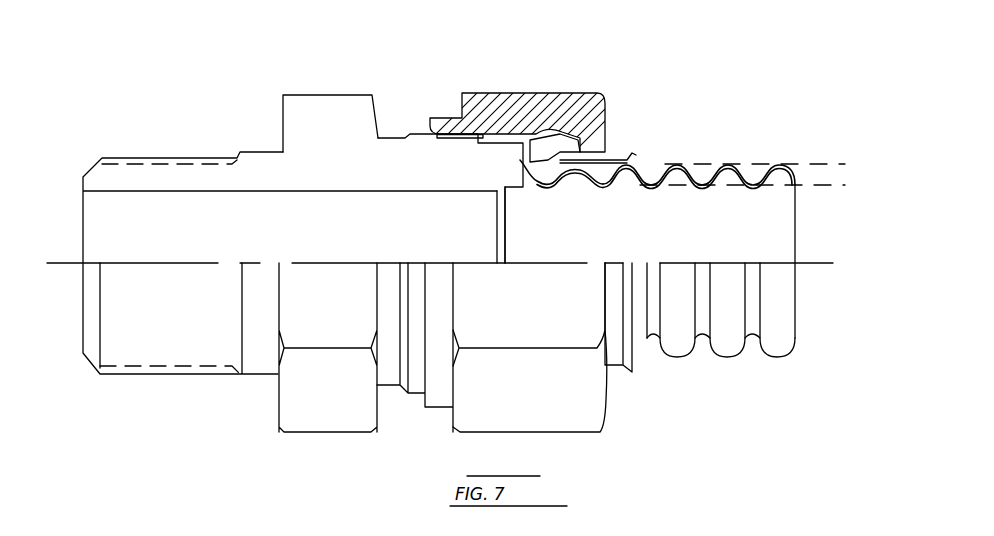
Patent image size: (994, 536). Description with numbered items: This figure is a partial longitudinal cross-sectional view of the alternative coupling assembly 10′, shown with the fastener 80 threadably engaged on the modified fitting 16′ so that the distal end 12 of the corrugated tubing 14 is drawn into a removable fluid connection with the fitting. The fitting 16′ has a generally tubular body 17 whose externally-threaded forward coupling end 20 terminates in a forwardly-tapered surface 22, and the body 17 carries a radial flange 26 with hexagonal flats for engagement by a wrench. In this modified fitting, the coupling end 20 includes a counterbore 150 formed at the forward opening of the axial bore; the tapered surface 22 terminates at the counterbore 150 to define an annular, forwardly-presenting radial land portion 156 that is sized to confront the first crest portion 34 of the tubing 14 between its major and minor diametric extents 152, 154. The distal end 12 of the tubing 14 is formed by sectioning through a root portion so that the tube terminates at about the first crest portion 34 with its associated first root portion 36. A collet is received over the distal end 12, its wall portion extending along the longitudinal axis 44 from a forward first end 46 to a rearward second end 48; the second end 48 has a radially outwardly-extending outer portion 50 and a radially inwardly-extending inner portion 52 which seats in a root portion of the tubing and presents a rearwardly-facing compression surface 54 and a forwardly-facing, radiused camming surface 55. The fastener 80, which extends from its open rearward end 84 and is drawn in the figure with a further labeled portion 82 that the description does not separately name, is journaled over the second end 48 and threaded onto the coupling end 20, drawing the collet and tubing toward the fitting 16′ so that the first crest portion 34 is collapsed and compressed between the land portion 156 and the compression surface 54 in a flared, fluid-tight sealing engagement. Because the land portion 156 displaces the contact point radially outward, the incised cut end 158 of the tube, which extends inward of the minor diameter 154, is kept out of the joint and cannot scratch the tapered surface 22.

The coupling assembly 10′ is at (740, 103).
The distal end 12 is at (517, 203).
The corrugated tubing 14 is at (755, 157).
The modified fitting 16′ is at (422, 85).
The tubular body 17 is at (388, 138).
The forward coupling end 20 is at (430, 118).
The tapered surface 22 is at (520, 170).
The radial flange 26 is at (322, 93).
The first crest portion 34 is at (522, 162).
The first root portion 36 is at (562, 184).
The longitudinal axis 44 is at (810, 263).
The first end 46 is at (631, 158).
The second end 48 is at (550, 95).
The outer portion 50 is at (578, 95).
The inner portion 52 is at (548, 192).
The compression surface 54 is at (547, 157).
The camming surface 55 is at (569, 176).
The fastener 80 is at (637, 98).
The sleeve 82 is at (490, 117).
The rearward end 84 is at (455, 133).
The counterbore 150 is at (530, 185).
The major diametric extent 152 is at (810, 163).
The minor diametric extent 154 is at (808, 187).
The land portion 156 is at (434, 244).
The cut end 158 is at (540, 184).